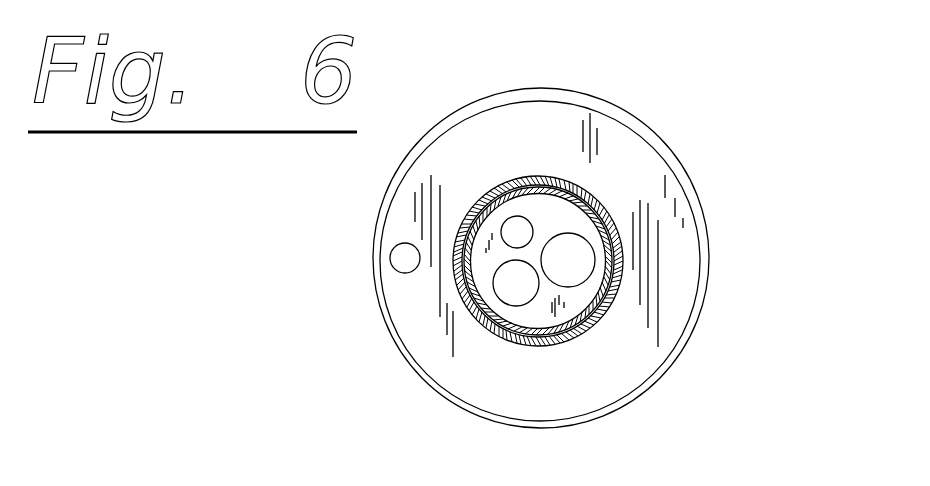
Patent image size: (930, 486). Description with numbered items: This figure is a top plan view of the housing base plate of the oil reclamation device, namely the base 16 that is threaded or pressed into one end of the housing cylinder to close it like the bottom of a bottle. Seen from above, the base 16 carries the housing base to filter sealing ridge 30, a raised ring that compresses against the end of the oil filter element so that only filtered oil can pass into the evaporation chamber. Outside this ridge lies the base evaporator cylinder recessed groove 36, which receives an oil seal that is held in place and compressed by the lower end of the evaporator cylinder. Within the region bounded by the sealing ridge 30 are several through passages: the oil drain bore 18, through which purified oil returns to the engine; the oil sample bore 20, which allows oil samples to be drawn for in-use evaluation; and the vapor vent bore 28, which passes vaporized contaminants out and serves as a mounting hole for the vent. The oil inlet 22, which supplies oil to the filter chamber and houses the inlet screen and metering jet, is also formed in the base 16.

The base 16 is at (430, 387).
The oil drain bore 18 is at (568, 233).
The oil sample bore 20 is at (503, 213).
The oil inlet 22 is at (393, 267).
The vapor vent bore 28 is at (497, 295).
The housing base to filter sealing ridge 30 is at (613, 303).
The base evaporator cylinder recessed groove 36 is at (600, 203).